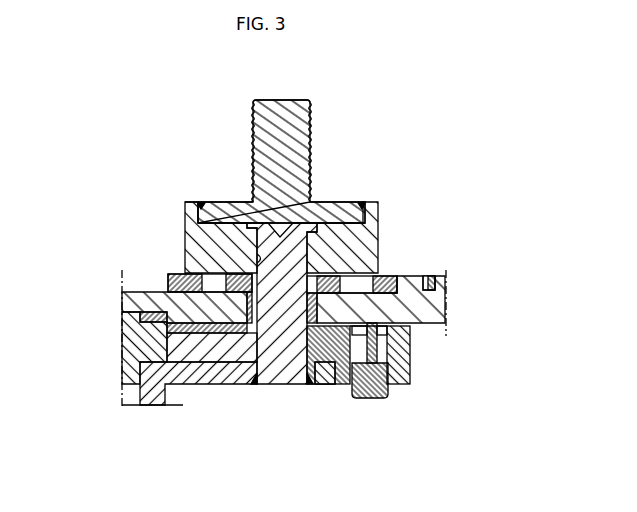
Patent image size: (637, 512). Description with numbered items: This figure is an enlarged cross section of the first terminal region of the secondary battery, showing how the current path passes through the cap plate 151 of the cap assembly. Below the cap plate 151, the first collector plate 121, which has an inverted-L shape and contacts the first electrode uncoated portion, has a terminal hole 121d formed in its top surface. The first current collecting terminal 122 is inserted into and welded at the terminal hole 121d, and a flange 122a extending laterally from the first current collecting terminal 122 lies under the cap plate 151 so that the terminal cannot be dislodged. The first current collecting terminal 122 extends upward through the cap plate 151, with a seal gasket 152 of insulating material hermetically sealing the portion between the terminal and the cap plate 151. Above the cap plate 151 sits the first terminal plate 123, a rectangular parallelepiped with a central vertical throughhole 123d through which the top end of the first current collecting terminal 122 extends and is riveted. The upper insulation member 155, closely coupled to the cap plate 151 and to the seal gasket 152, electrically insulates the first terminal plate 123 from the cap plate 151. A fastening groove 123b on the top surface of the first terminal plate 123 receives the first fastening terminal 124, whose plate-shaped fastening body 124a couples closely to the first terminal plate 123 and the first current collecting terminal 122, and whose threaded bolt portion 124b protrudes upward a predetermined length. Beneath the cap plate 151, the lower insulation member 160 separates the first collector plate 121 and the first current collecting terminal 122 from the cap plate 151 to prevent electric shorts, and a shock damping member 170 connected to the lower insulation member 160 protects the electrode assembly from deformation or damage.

The first collector plate 121 is at (150, 407).
The terminal hole 121d is at (266, 387).
The first current collecting terminal 122 is at (287, 347).
The flange 122a is at (183, 346).
The first terminal plate 123 is at (190, 233).
The fastening groove 123b is at (185, 213).
The throughhole 123d is at (258, 257).
The first fastening terminal 124 is at (157, 121).
The fastening body 124a is at (230, 207).
The bolt portion 124b is at (262, 126).
The cap plate 151 is at (437, 306).
The seal gasket 152 is at (190, 306).
The upper insulation member 155 is at (362, 280).
The lower insulation member 160 is at (418, 364).
The shock damping member 170 is at (370, 408).